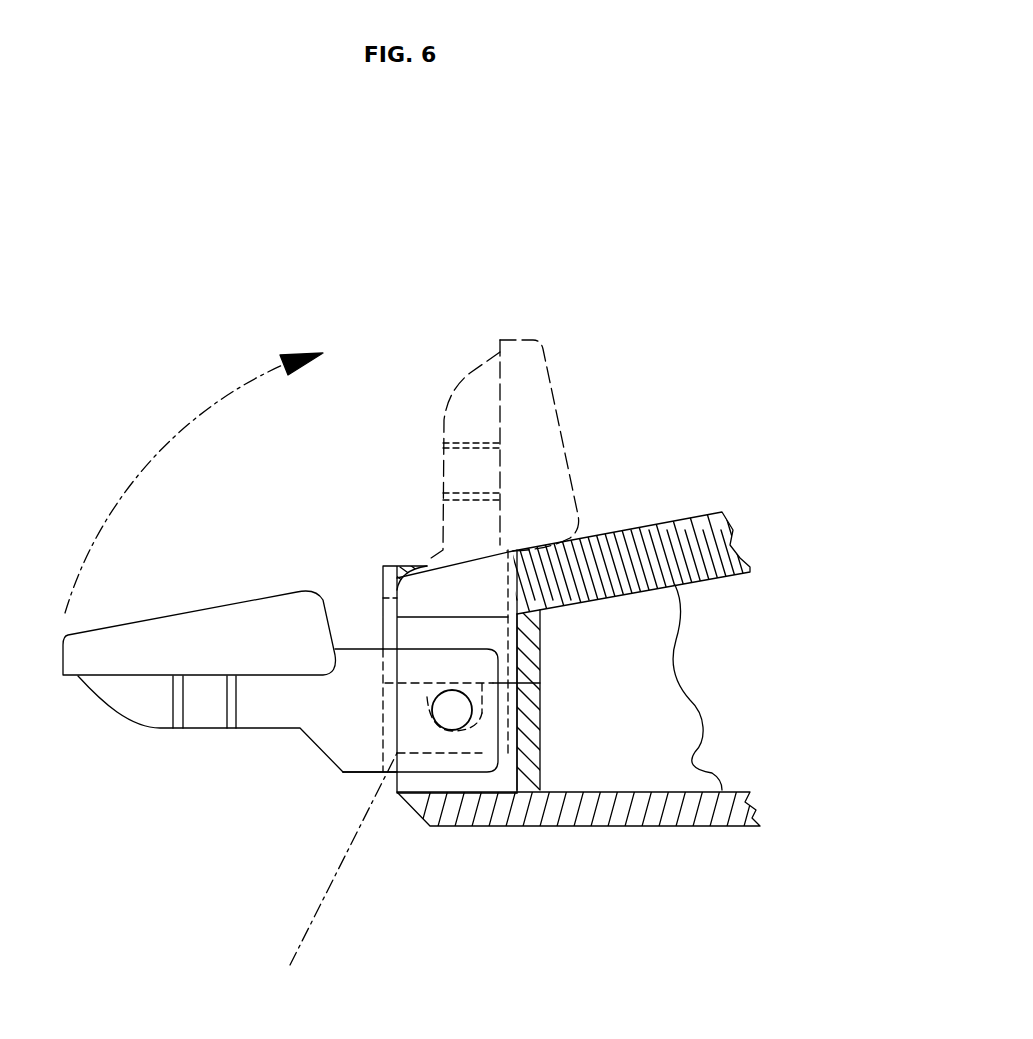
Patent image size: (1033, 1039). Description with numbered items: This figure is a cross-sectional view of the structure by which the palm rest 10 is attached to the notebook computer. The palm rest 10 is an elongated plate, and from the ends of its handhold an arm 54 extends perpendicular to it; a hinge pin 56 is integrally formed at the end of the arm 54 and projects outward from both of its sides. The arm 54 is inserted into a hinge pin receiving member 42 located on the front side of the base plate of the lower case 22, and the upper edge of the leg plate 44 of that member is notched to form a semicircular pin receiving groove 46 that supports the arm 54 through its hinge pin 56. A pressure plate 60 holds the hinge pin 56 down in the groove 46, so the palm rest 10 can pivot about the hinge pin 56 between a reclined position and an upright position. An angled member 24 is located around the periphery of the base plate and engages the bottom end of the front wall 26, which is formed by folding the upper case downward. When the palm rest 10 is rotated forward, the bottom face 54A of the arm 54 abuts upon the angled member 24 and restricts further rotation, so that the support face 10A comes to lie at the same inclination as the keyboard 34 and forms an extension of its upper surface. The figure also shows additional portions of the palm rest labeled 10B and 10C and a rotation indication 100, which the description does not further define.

The palm rest 10 is at (444, 584).
The support face 10A is at (203, 605).
The handle lower portion 10B is at (327, 630).
The handle rib 10C is at (213, 728).
The direction of handle rotation 100 is at (443, 468).
The lower case 22 is at (525, 826).
The angled member 24 is at (423, 688).
The front wall 26 is at (382, 618).
The keyboard 34 is at (687, 515).
The hinge pin receiving member 42 is at (553, 712).
The leg plate 44 is at (503, 778).
The pin receiving groove 46 is at (325, 874).
The arm 54 is at (367, 648).
The bottom face 54A is at (347, 772).
The hinge pin 56 is at (453, 715).
The pressure plate 60 is at (495, 630).